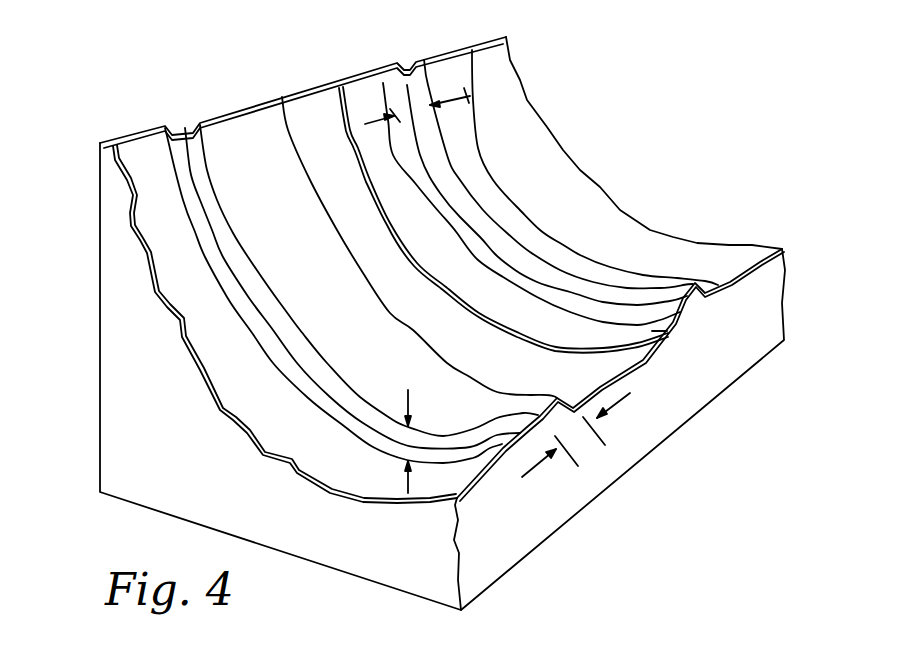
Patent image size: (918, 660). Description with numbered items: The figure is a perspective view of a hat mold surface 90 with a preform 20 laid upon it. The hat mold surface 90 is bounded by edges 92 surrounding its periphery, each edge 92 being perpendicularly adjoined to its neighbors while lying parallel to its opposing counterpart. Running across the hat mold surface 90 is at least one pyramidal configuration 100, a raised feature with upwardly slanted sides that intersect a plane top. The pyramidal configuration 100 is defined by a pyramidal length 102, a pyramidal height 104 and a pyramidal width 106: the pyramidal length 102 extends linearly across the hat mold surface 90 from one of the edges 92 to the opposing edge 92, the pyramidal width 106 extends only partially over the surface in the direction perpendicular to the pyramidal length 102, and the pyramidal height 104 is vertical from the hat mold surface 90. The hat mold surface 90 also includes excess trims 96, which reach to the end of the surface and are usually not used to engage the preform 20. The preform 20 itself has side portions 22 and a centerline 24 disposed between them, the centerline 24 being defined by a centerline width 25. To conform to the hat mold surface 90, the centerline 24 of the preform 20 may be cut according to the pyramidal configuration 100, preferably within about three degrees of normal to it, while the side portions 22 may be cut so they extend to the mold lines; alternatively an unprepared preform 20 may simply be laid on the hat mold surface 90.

The preform 20 is at (679, 332).
The side portions 22 is at (363, 93).
The centerline 24 is at (403, 87).
The centerline width 25 is at (465, 92).
The hat mold surface 90 is at (604, 99).
The edges 92 is at (128, 213).
The excess trims 96 is at (197, 307).
The pyramidal configuration 100 is at (193, 152).
The pyramidal length 102 is at (380, 300).
The pyramidal height 104 is at (408, 392).
The pyramidal width 106 is at (630, 395).